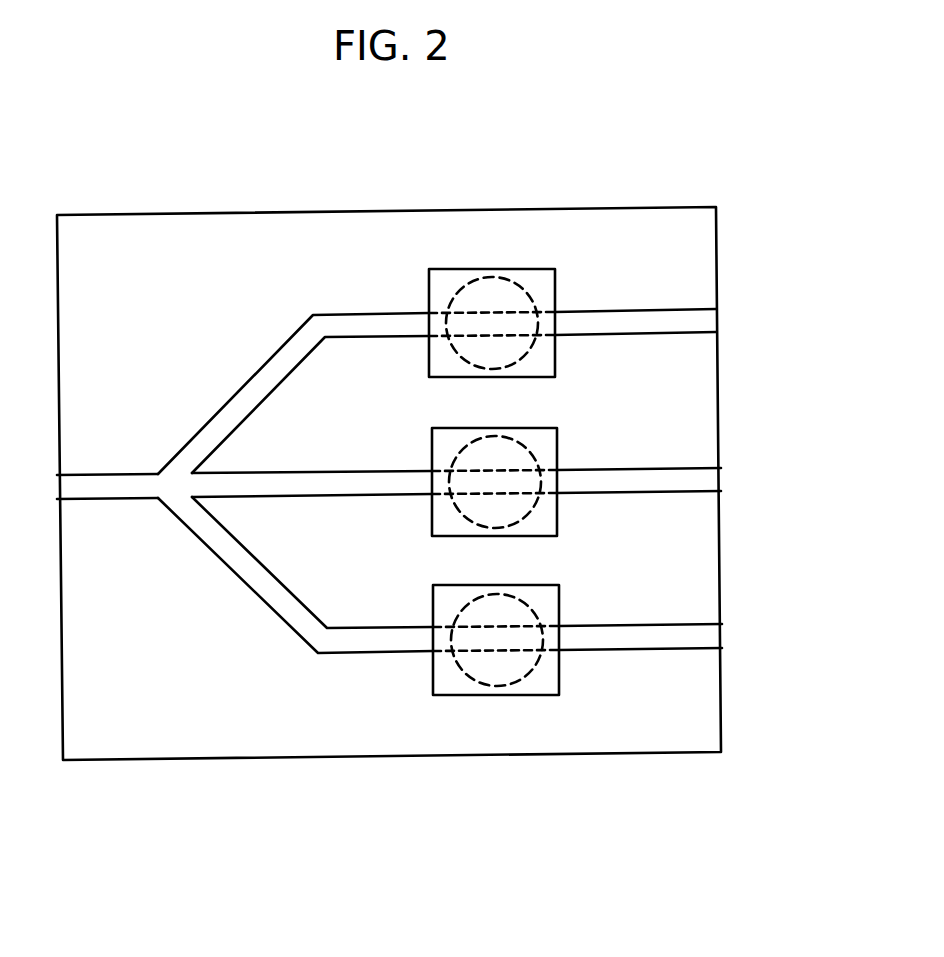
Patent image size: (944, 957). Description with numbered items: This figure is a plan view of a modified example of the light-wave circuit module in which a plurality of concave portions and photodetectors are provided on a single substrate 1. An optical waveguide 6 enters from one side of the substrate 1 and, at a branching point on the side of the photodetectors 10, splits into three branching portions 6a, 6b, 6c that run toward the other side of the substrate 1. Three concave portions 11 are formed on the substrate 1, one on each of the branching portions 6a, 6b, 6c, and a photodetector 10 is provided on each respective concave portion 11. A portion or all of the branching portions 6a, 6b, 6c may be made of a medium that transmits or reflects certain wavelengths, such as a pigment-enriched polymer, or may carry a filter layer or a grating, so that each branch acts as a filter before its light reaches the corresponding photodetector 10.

The substrate 1 is at (697, 257).
The optical waveguide 6 is at (105, 490).
The branching portion 6a is at (284, 345).
The branching portion 6b is at (315, 472).
The branching portion 6c is at (352, 628).
The photodetector 10 is at (443, 268).
The concave portion 11 is at (523, 288).